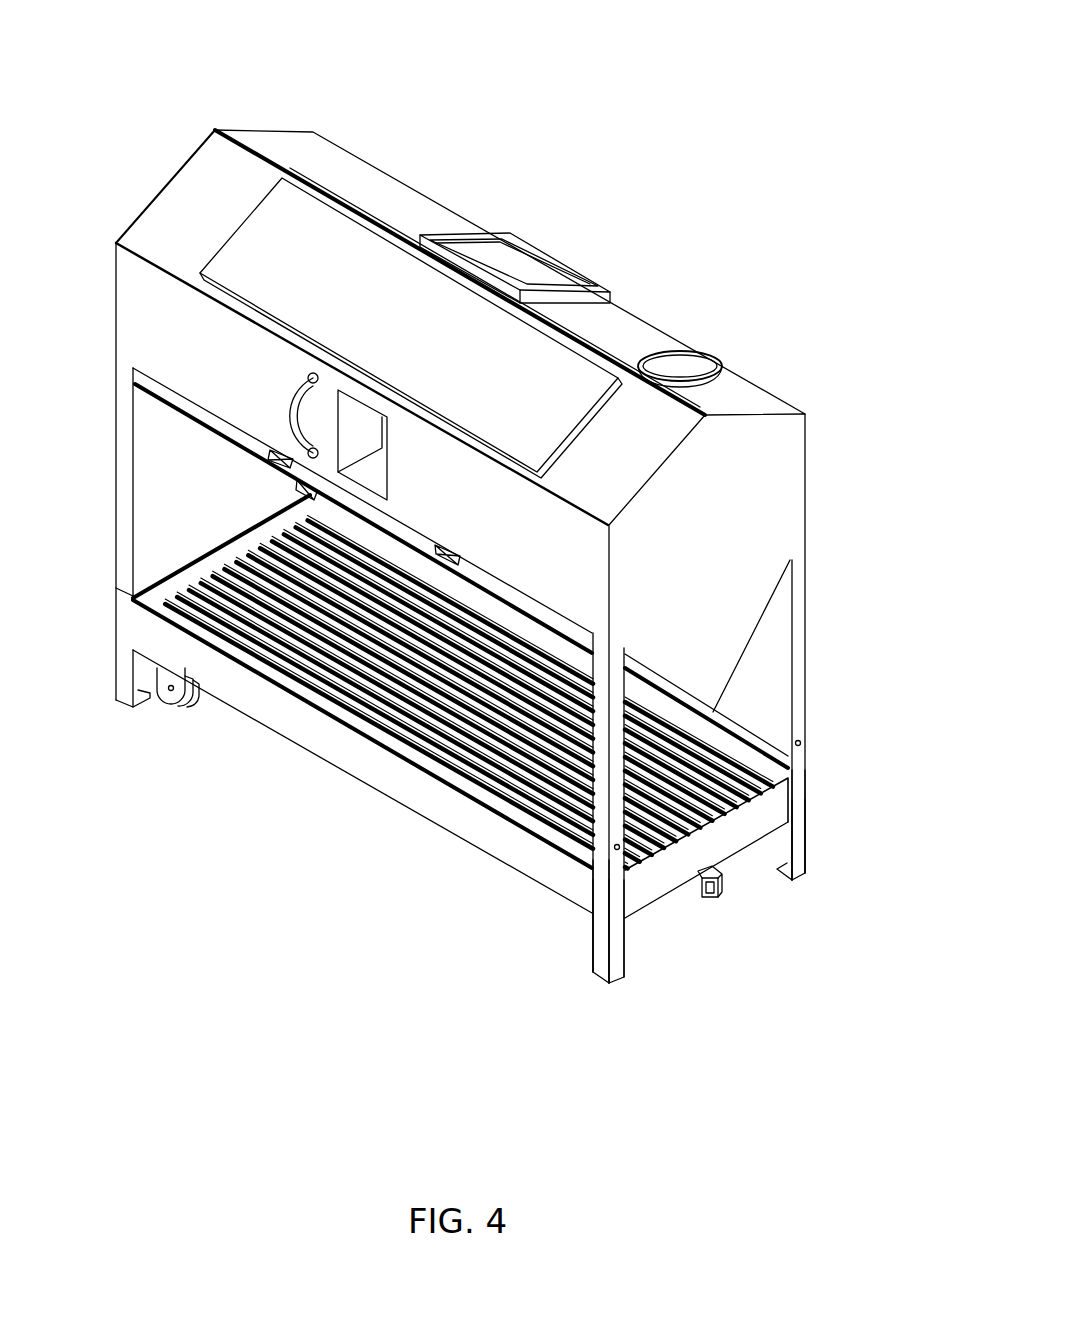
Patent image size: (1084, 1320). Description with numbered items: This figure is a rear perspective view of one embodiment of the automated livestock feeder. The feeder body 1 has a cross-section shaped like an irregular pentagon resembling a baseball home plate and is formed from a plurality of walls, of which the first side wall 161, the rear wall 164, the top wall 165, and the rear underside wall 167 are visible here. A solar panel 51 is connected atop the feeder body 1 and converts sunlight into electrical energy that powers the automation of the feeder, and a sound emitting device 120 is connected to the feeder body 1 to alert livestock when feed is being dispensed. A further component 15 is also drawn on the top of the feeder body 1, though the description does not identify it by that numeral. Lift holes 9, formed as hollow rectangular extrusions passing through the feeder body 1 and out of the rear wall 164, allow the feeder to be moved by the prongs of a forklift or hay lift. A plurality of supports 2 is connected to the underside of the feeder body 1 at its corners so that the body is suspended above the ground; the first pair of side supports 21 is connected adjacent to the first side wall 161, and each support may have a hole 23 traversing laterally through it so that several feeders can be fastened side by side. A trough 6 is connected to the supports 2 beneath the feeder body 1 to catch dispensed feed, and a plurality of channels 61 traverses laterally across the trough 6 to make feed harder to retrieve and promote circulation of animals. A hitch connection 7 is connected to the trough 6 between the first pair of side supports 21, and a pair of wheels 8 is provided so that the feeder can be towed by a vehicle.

The feeder body 1 is at (165, 110).
The top wall 165 is at (247, 184).
The solar panel 51 is at (243, 237).
The tray 15 is at (523, 262).
The sound emitting device 120 is at (676, 363).
The first side wall 161 is at (778, 495).
The rear underside wall 167 is at (652, 678).
The rear wall 164 is at (530, 554).
The lift holes 9 is at (283, 450).
The trough 6 is at (311, 781).
The channels 61 is at (223, 590).
The first pair of side supports 21 is at (828, 705).
The supports 2 is at (802, 828).
The hole 23 is at (802, 743).
The hitch connection 7 is at (720, 890).
The wheels 8 is at (153, 710).